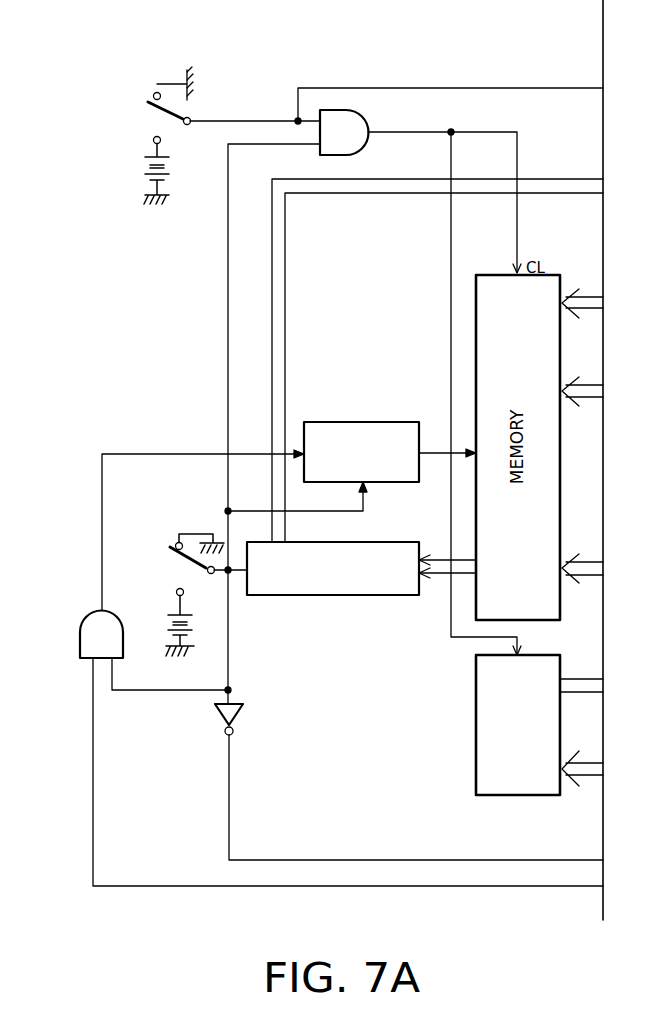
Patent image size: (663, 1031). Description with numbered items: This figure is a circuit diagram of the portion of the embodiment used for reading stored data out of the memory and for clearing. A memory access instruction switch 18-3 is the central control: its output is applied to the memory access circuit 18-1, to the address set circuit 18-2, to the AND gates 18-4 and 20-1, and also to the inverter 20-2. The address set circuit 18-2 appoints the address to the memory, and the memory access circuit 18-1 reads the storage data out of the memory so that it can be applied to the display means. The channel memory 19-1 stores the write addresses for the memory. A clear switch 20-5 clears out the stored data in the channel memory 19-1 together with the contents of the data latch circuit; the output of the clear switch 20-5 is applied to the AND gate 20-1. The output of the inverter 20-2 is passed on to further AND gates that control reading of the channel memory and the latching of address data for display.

The clear switch 20-5 is at (160, 112).
The AND gate 20-1 is at (368, 123).
The address set circuit 18-2 is at (363, 420).
The memory access circuit 18-1 is at (348, 598).
The memory access instruction switch 18-3 is at (180, 562).
The AND gate 18-4 is at (80, 625).
The inverter 20-2 is at (241, 714).
The channel memory 19-1 is at (513, 800).